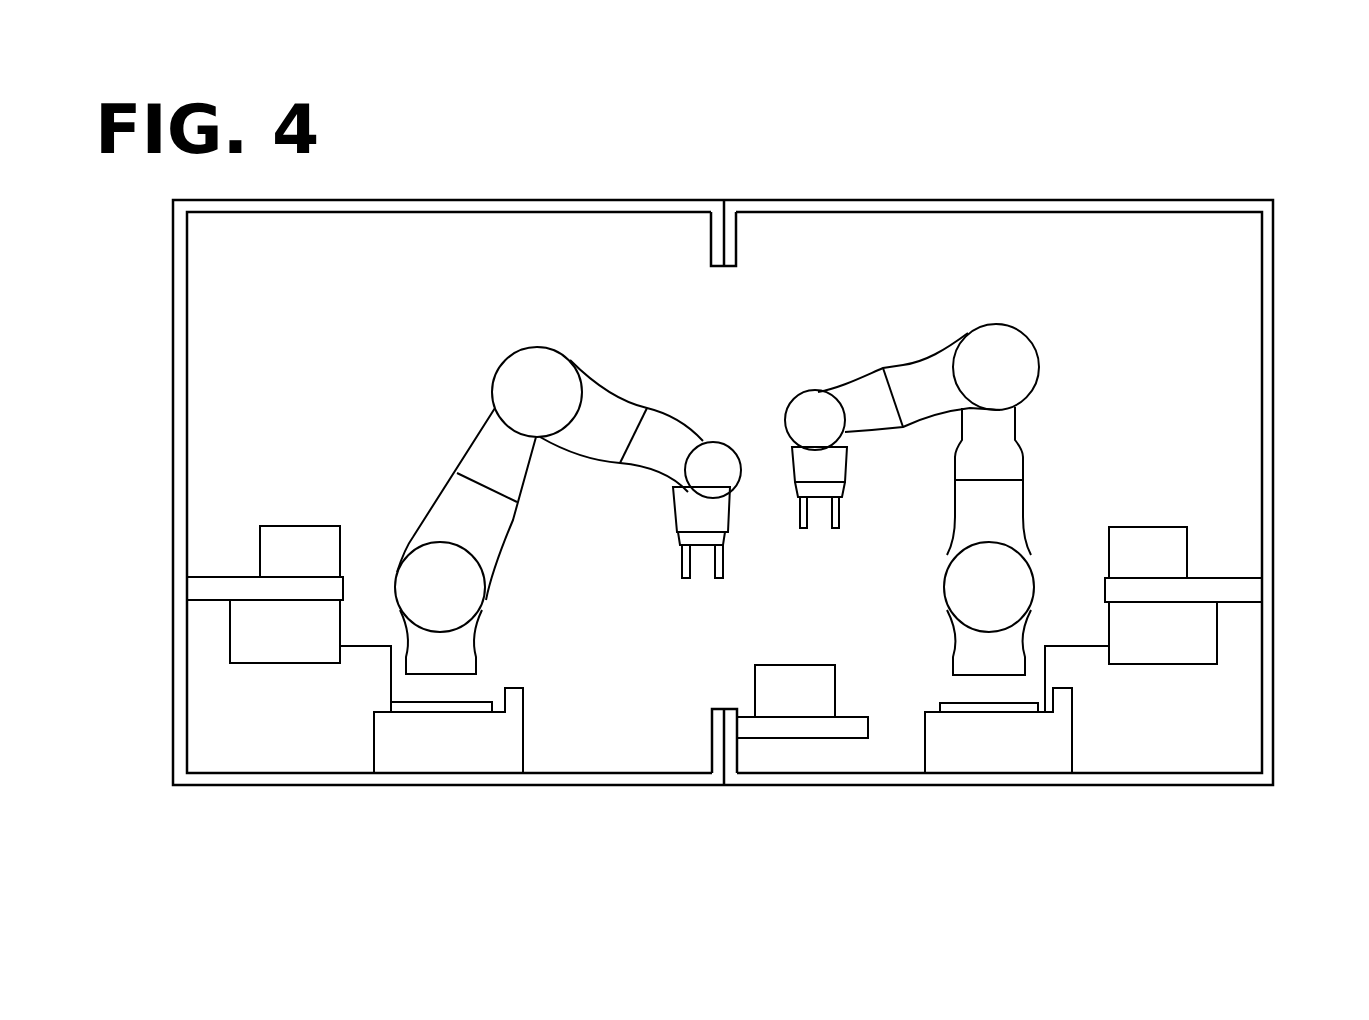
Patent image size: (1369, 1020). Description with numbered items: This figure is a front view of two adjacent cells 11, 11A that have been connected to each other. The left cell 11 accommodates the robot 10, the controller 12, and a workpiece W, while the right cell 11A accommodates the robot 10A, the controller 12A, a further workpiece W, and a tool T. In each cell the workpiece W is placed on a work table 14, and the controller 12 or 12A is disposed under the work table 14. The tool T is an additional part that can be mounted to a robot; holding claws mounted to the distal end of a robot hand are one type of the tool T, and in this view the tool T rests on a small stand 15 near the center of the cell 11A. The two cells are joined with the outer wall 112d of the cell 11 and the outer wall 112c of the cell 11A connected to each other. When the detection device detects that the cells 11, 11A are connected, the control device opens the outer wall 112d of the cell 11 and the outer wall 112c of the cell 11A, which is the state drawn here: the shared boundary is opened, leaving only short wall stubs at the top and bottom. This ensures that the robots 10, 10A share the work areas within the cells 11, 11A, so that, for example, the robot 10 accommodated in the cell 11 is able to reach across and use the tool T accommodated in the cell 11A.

The cell 11 is at (545, 196).
The cell 11A is at (989, 196).
The outer wall 112c is at (180, 465).
The outer wall 112d is at (713, 238).
The robot 10 is at (502, 342).
The robot 10A is at (1018, 316).
The workpiece W is at (316, 538).
The work table 14 is at (212, 590).
The controller 12 is at (316, 653).
The controller 12A is at (1180, 653).
The tool T is at (810, 675).
The tool stand 15 is at (853, 725).